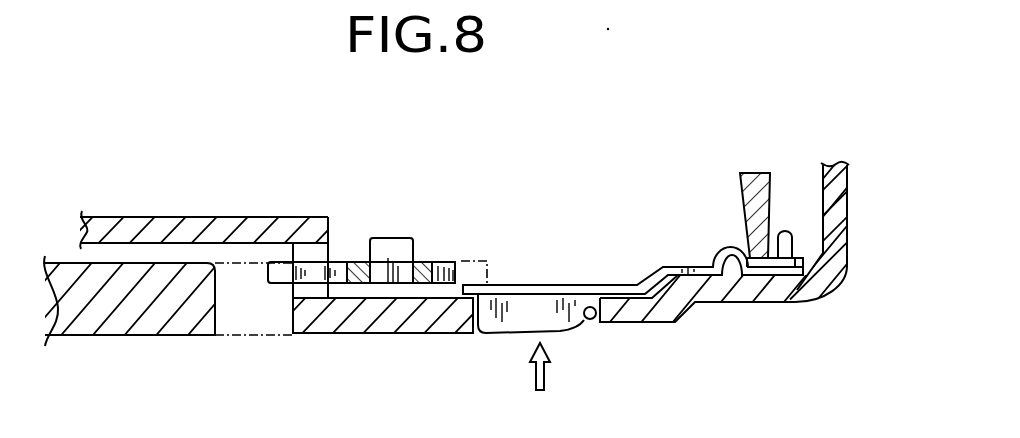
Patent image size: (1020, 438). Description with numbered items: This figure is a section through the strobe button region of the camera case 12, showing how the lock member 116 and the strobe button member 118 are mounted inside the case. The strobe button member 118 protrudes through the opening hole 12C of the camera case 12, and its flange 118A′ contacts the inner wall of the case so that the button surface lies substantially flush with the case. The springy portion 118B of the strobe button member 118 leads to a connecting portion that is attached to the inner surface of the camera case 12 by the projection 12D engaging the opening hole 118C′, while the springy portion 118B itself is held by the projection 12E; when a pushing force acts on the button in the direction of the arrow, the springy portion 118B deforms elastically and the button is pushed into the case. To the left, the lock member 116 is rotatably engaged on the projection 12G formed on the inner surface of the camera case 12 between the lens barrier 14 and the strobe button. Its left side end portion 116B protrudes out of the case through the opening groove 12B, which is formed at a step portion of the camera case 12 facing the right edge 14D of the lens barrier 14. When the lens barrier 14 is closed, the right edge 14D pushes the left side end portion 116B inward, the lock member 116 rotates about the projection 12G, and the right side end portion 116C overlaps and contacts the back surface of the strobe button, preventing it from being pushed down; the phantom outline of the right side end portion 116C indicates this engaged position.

The camera case 12 is at (168, 223).
The opening groove 12B is at (303, 252).
The opening hole 12C is at (586, 326).
The projection 12D is at (793, 230).
The projection 12E is at (747, 188).
The projection 12G is at (385, 247).
The lens barrier 14 is at (107, 334).
The right edge 14D is at (218, 283).
The lock member 116 is at (337, 277).
The left side end portion 116B is at (280, 273).
The right side end portion 116C is at (463, 261).
The strobe button member 118 is at (528, 323).
The flange 118A′ is at (538, 287).
The springy portion 118B is at (723, 253).
The opening hole 118C′ is at (795, 300).